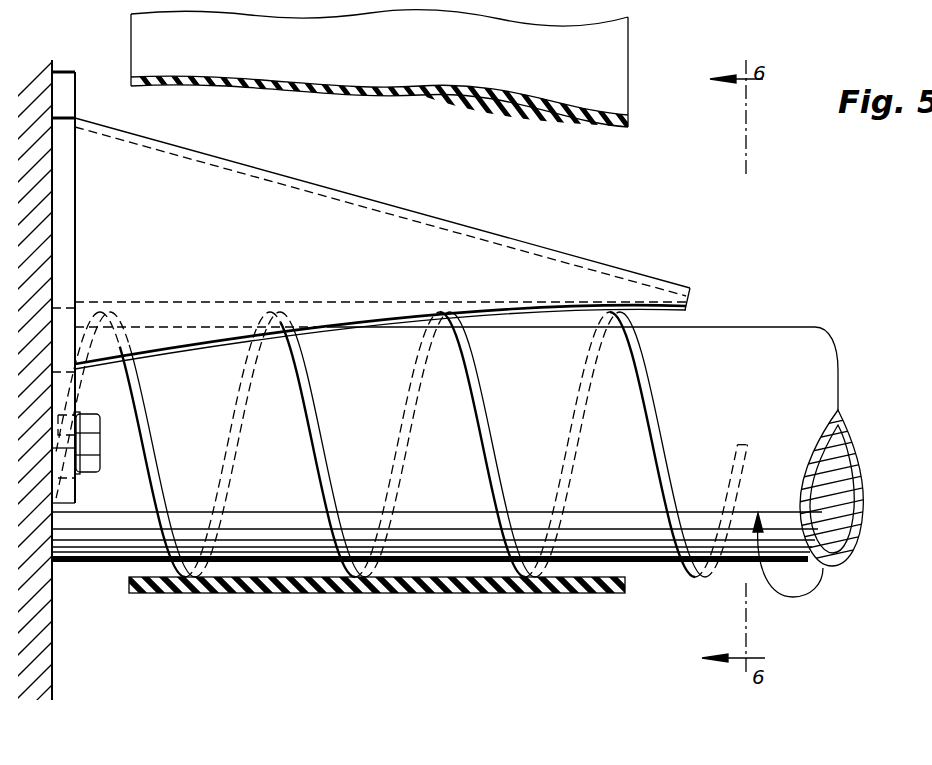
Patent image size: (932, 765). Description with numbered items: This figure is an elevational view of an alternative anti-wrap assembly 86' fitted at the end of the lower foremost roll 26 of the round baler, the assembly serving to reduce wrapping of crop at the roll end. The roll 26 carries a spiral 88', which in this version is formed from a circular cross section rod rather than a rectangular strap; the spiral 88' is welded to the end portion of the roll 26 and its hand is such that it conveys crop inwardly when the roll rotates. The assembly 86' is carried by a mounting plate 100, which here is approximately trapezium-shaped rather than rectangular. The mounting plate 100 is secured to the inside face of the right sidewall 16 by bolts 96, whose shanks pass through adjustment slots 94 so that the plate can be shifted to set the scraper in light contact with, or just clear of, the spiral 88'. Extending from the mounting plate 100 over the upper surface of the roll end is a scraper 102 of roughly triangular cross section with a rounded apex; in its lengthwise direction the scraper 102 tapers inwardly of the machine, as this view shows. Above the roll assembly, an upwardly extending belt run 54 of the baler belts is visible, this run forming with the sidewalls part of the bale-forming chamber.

The right sidewall 16 is at (41, 81).
The mounting plate 100 is at (65, 93).
The belt run 54 is at (326, 56).
The scraper 102 is at (271, 251).
The anti-wrap assembly 86' is at (382, 203).
The lower foremost roll 26 is at (369, 399).
The spiral 88' is at (468, 444).
The bolt 96 is at (92, 443).
The adjustment slot 94 is at (78, 472).